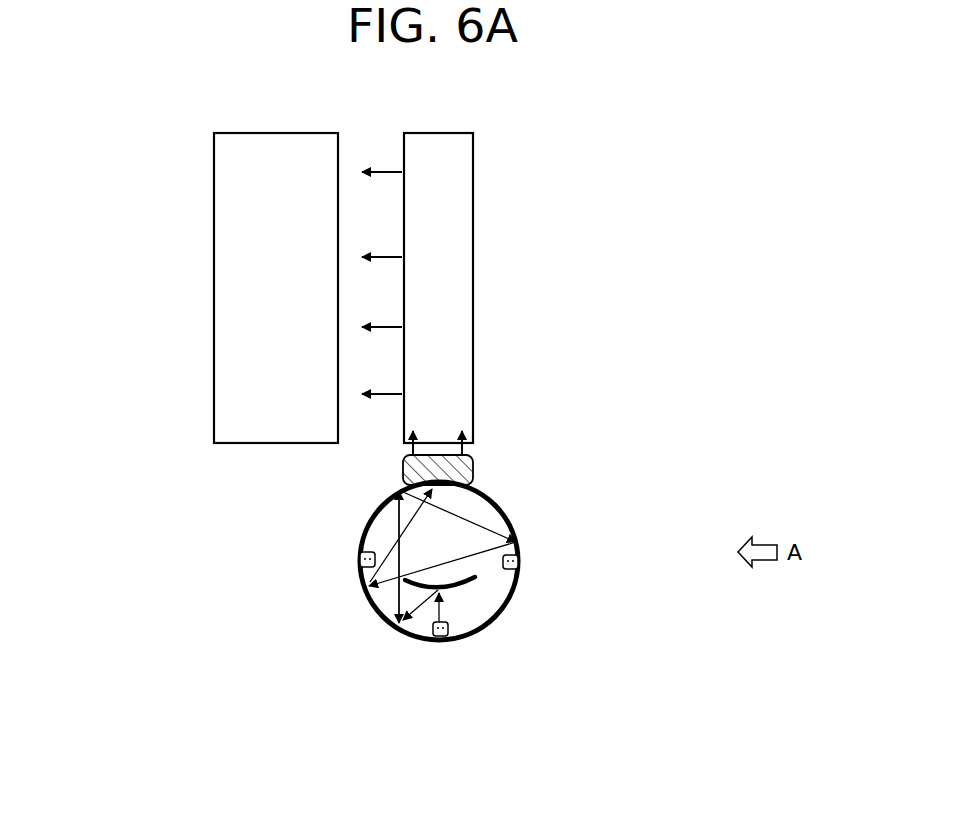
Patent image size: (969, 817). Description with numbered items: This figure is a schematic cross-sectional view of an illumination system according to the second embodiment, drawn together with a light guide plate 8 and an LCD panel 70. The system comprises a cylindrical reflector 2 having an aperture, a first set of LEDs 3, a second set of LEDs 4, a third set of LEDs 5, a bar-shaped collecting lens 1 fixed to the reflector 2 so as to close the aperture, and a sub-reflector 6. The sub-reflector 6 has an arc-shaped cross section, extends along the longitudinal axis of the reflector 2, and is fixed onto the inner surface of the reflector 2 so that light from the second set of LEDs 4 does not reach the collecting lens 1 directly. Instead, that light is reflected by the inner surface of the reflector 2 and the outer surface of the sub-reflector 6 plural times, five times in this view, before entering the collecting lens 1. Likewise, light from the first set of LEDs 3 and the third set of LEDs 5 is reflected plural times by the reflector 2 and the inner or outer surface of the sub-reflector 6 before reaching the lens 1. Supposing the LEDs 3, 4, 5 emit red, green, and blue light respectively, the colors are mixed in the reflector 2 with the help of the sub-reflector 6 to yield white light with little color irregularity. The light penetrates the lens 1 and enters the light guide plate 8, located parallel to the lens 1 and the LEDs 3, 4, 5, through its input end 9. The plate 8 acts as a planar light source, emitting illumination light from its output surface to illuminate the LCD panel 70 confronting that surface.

The LCD panel 70 is at (214, 205).
The light guide plate 8 is at (473, 217).
The input end 9 is at (447, 438).
The collecting lens 1 is at (473, 465).
The cylindrical reflector 2 is at (508, 522).
The first set of LEDs 3 is at (360, 562).
The second set of LEDs 4 is at (441, 640).
The third set of LEDs 5 is at (520, 562).
The sub-reflector 6 is at (470, 580).